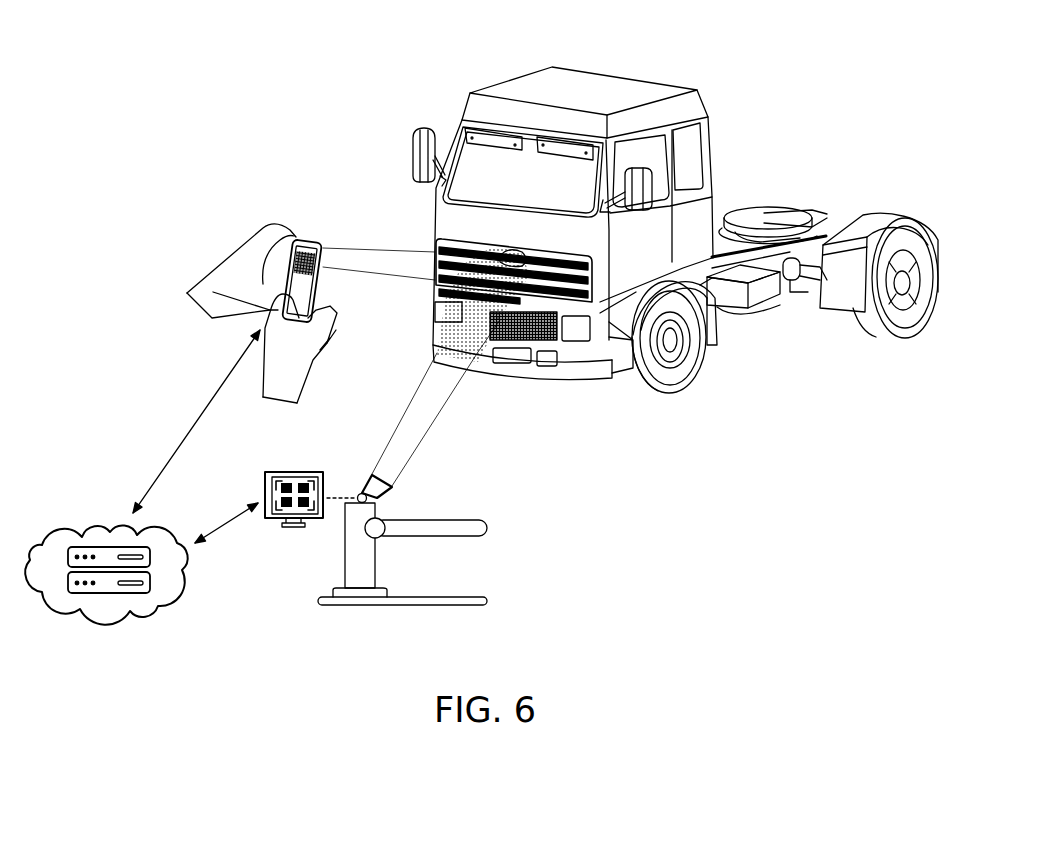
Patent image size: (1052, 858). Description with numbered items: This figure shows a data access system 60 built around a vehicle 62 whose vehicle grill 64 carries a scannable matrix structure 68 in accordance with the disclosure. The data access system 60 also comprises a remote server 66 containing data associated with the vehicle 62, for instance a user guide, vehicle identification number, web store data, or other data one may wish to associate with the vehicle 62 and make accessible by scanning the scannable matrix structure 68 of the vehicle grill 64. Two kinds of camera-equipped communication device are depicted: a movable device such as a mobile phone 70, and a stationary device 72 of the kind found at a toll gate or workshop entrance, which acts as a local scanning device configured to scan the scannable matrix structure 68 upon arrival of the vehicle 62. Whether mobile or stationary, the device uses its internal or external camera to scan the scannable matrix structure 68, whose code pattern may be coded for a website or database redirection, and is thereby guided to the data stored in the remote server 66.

The data access system 60 is at (180, 73).
The vehicle 62 is at (653, 60).
The vehicle grill 64 is at (450, 245).
The remote server 66 is at (115, 618).
The scannable matrix structure 68 is at (518, 252).
The mobile phone 70 is at (313, 238).
The stationary device 72 is at (320, 530).